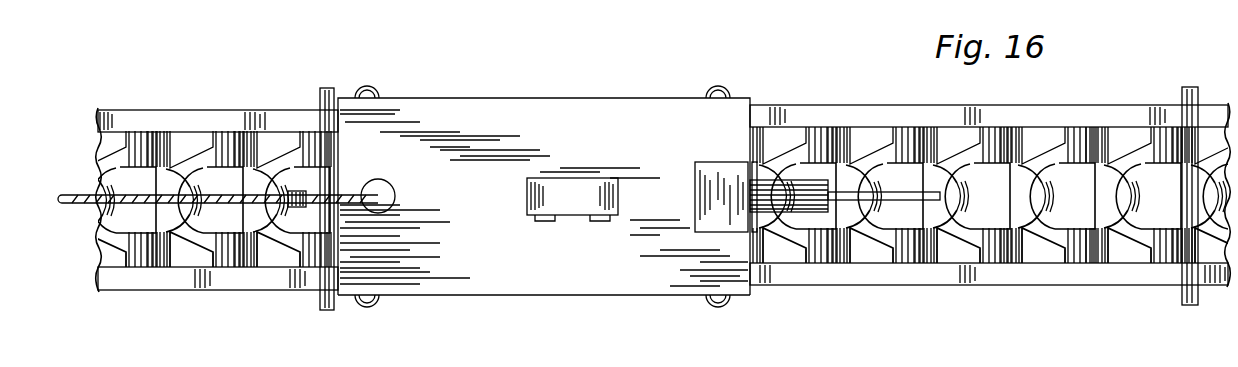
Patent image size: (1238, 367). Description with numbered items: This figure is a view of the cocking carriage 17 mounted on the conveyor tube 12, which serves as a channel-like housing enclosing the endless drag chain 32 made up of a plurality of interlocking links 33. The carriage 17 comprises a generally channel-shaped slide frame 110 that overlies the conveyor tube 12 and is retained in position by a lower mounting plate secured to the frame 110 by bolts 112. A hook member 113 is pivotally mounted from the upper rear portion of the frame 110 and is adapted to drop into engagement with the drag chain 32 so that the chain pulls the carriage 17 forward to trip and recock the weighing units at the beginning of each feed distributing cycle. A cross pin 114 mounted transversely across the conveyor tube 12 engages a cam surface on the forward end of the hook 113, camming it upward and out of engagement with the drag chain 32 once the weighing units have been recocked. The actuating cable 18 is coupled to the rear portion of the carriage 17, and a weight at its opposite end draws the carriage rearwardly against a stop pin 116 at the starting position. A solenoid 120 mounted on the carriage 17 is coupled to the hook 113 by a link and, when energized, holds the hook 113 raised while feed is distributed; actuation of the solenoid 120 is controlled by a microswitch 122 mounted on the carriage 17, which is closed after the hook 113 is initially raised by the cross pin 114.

The conveyor tube 12 is at (1040, 286).
The cocking carriage 17 is at (514, 297).
The actuating cable 18 is at (66, 195).
The drag chain 32 is at (966, 243).
The interlocking links 33 is at (215, 257).
The slide frame 110 is at (548, 103).
The bolts 112 is at (374, 90).
The hook member 113 is at (886, 194).
The cross pin 114 is at (1185, 304).
The stop pin 116 is at (322, 300).
The solenoid 120 is at (812, 168).
The microswitch 122 is at (574, 181).